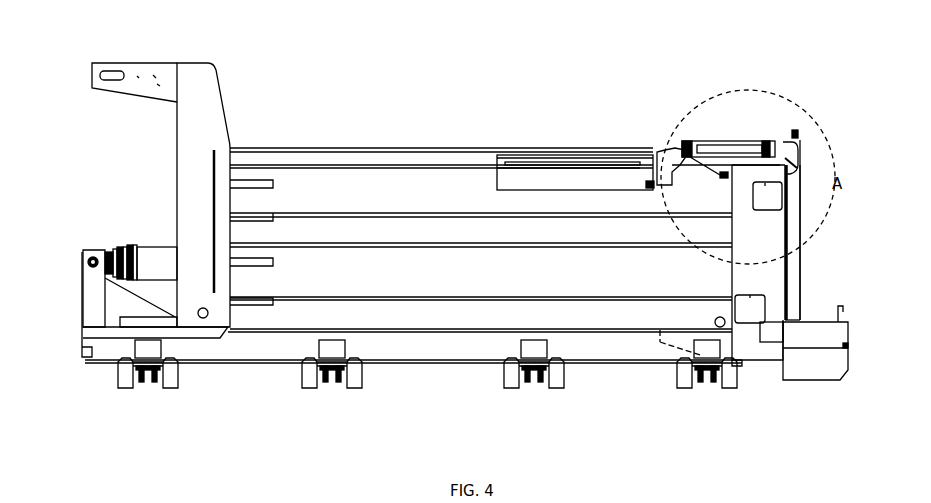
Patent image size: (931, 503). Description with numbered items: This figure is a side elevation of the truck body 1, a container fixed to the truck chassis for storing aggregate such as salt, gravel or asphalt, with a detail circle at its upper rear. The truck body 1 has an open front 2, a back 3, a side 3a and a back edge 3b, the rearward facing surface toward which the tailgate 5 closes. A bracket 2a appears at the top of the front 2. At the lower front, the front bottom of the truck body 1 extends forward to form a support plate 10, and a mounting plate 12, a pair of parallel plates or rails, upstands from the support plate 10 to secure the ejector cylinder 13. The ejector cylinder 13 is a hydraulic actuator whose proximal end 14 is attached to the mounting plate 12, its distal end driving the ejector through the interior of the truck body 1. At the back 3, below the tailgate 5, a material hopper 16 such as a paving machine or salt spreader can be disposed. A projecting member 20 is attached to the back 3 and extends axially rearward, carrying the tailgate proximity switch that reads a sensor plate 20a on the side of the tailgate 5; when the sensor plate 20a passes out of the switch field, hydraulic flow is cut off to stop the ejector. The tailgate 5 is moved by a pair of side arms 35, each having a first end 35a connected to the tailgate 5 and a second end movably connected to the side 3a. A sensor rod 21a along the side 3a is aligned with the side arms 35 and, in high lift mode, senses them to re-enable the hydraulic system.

The truck body 1 is at (382, 152).
The front 2 is at (178, 153).
The bracket 2a is at (163, 78).
The back 3 is at (787, 288).
The side 3a is at (483, 200).
The back edge 3b is at (788, 310).
The tailgate 5 is at (802, 218).
The support plate 10 is at (100, 334).
The mounting plate 12 is at (97, 285).
The ejector cylinder 13 is at (155, 253).
The proximal end 14 is at (117, 250).
The material hopper 16 is at (813, 333).
The projecting member 20 is at (792, 173).
The sensor plate 20a is at (795, 132).
The sensor rod 21a is at (672, 155).
The side arm 35 is at (665, 156).
The first end 35a is at (768, 145).